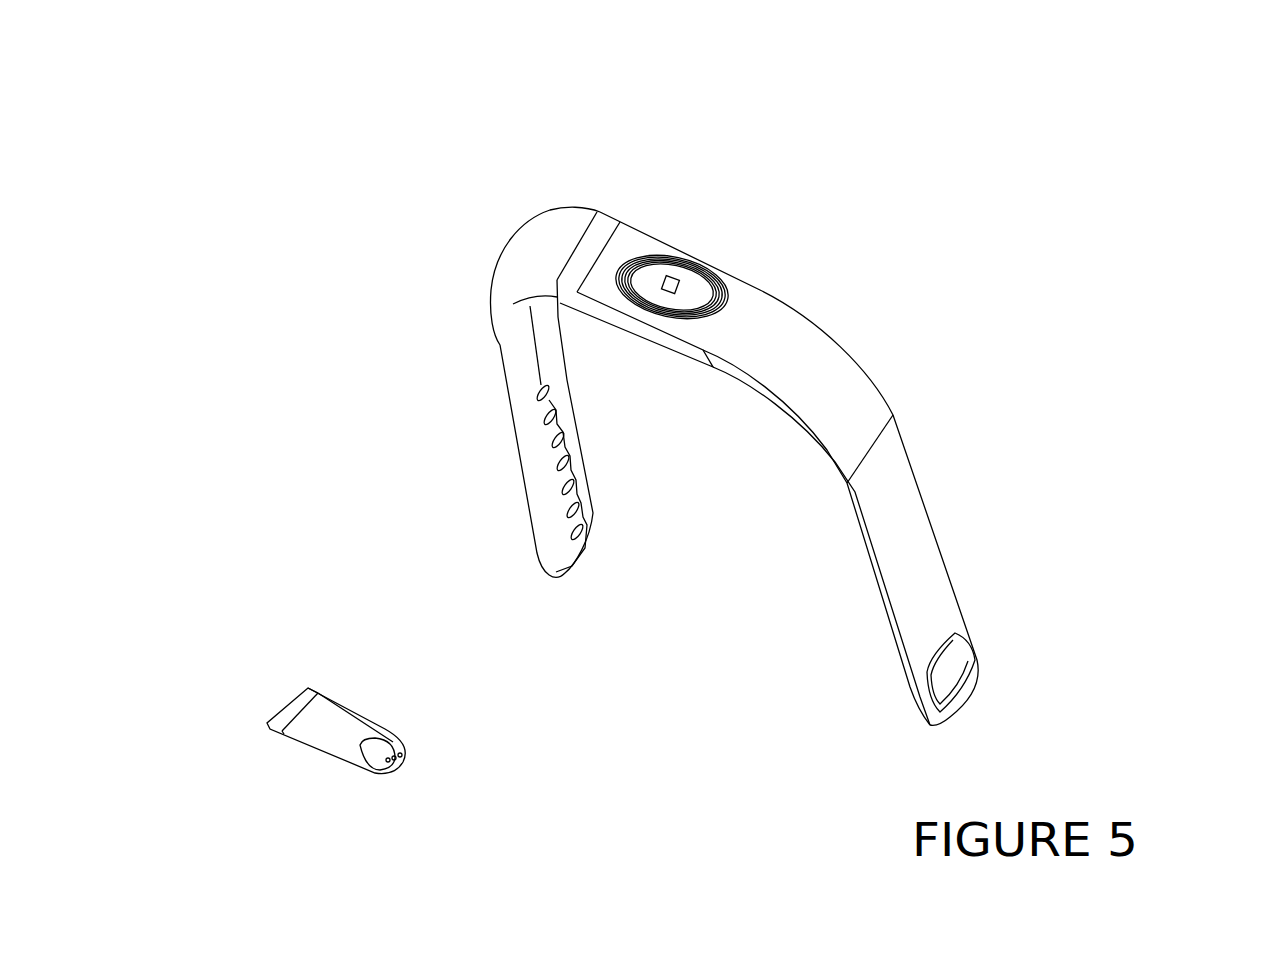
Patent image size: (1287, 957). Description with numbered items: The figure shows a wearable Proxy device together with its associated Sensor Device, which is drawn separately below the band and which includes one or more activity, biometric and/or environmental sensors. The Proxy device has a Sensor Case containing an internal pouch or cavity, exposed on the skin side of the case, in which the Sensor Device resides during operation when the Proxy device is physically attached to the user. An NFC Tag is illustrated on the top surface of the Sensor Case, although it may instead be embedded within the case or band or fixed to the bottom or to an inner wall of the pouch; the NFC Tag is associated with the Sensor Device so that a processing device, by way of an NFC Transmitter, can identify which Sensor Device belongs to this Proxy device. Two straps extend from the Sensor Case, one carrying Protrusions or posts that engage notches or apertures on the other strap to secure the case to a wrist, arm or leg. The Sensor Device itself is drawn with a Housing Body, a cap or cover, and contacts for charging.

The proxy device Proxy device is at (1060, 285).
The sensor case Sensor Case is at (563, 232).
The NFC tag NFC Tag is at (692, 210).
The NFC transmitter NFC Transmitter is at (621, 167).
The protrusions or posts Protrusions is at (868, 664).
The sensor device Sensor Device is at (375, 679).
The housing body Housing Body is at (325, 728).